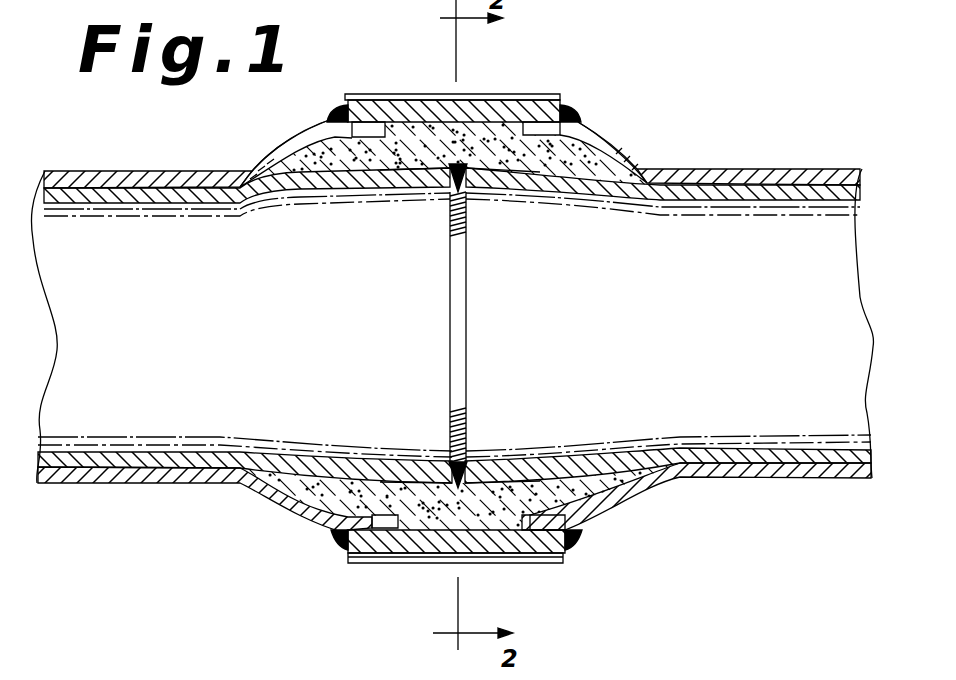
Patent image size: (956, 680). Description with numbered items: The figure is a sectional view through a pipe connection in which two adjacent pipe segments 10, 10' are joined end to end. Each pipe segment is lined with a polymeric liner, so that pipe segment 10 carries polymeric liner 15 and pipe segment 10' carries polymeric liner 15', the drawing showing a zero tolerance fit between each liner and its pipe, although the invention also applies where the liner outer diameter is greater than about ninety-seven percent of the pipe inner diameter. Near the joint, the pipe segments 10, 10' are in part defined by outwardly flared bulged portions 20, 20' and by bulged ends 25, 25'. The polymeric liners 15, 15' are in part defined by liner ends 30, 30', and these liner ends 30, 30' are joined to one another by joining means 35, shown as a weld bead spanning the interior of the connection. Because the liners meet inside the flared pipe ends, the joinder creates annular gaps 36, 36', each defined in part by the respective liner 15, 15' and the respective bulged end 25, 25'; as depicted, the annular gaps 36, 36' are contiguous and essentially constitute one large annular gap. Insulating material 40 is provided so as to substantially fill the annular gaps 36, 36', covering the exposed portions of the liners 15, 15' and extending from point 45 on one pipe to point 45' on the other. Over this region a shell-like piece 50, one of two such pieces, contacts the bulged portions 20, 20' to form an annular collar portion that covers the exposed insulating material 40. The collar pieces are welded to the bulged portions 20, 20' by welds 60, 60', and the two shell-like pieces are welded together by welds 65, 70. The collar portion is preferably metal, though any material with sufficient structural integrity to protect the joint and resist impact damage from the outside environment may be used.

The pipe segment 10 is at (148, 155).
The pipe segment 10' is at (748, 141).
The polymeric liner 15 is at (247, 217).
The polymeric liner 15' is at (663, 214).
The bulged portion 20 is at (309, 99).
The bulged portion 20' is at (629, 131).
The bulged end 25 is at (449, 592).
The bulged end 25' is at (696, 491).
The liner end 30 is at (416, 424).
The liner end 30' is at (502, 440).
The joining means 35 is at (466, 343).
The annular gap 36 is at (397, 215).
The annular gap 36' is at (503, 206).
The insulating material 40 is at (568, 162).
The point 45 is at (294, 148).
The point 45' is at (630, 145).
The shell-like piece 50 is at (563, 100).
The weld 60 is at (367, 86).
The weld 60' is at (602, 97).
The weld 65 is at (492, 96).
The weld 70 is at (432, 562).